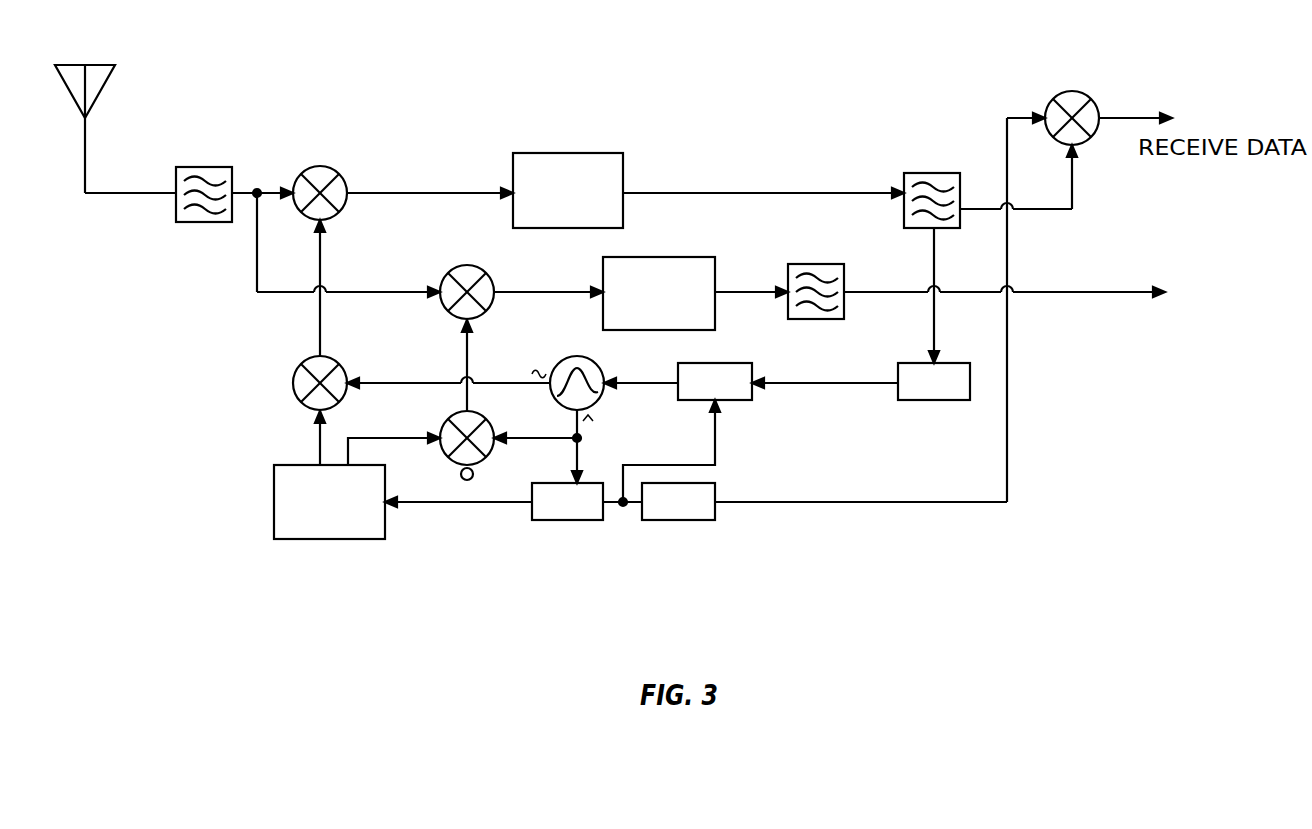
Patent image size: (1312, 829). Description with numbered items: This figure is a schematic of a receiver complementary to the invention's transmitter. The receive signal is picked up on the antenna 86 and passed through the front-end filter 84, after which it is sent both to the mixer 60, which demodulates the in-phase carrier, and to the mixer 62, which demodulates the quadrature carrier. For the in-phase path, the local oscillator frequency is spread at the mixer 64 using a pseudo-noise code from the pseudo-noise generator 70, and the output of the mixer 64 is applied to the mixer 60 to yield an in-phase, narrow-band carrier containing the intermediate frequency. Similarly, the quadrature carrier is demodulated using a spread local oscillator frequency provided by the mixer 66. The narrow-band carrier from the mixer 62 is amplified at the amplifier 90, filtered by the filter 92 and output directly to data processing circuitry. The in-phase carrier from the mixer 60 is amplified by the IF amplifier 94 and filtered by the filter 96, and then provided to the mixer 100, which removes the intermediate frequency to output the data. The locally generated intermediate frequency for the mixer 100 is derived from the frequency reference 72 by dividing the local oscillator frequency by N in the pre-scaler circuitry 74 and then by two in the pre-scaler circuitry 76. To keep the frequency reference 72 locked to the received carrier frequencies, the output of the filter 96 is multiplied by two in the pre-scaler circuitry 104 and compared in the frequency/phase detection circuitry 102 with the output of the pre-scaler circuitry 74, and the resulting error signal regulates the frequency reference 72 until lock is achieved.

The mixer 60 is at (303, 171).
The mixer 62 is at (485, 272).
The mixer 64 is at (340, 362).
The mixer 66 is at (485, 417).
The pseudo-noise generator 70 is at (274, 488).
The frequency reference 72 is at (564, 358).
The pre-scaler circuitry 74 is at (567, 520).
The pre-scaler circuitry 76 is at (683, 520).
The front-end filter 84 is at (209, 167).
The antenna 86 is at (107, 85).
The amplifier 90 is at (672, 257).
The filter 92 is at (820, 264).
The IF amplifier 94 is at (583, 153).
The filter 96 is at (935, 173).
The mixer 100 is at (1090, 98).
The frequency/phase detection circuitry 102 is at (727, 363).
The pre-scaler circuitry 104 is at (920, 400).